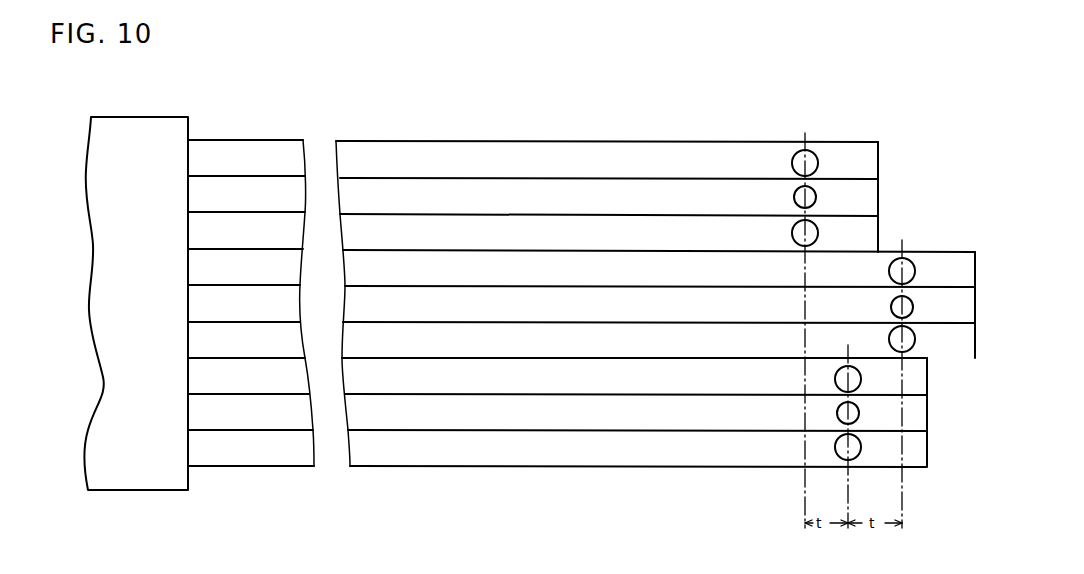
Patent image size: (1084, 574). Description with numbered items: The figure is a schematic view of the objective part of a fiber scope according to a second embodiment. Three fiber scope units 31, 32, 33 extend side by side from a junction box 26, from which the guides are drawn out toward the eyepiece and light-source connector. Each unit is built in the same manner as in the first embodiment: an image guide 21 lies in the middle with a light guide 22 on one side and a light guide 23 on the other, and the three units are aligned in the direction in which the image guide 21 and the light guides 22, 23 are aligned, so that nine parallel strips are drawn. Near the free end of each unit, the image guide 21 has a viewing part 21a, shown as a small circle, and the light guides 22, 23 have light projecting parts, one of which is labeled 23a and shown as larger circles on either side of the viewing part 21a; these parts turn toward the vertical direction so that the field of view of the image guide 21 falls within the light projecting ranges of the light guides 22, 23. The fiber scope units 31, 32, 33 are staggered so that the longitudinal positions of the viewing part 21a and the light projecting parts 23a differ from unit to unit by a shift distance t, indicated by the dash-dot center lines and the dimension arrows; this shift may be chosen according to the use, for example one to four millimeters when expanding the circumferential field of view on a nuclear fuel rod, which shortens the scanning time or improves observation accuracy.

The junction box 26 is at (145, 117).
The light guide 22 is at (878, 162).
The image guide 21 is at (878, 198).
The light guide 23 is at (878, 228).
The fiber scope unit 31 is at (978, 130).
The fiber scope unit 32 is at (1046, 290).
The fiber scope unit 33 is at (1000, 410).
The light projecting part 23a is at (793, 159).
The viewing part 21a is at (795, 200).